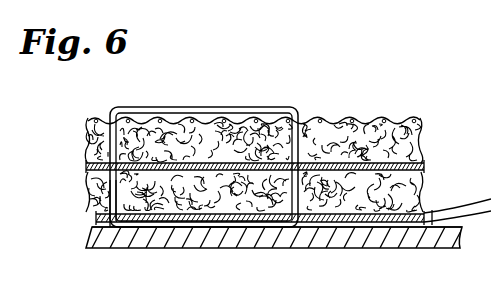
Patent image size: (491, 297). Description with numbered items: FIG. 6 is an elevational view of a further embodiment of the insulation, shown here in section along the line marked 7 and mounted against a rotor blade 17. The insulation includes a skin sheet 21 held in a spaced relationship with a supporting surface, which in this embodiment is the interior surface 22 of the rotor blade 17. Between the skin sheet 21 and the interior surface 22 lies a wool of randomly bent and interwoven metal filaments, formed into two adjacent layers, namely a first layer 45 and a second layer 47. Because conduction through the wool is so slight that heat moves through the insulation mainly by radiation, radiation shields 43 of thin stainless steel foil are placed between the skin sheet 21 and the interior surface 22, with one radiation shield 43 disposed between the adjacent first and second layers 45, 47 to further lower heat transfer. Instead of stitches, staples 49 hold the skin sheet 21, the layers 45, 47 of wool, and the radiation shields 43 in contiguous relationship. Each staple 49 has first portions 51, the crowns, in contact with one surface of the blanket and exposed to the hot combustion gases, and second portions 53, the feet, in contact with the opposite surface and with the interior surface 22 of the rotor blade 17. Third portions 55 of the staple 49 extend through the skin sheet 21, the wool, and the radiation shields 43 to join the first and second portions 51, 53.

The section line 7- 7 is at (429, 96).
The rotor blade 17 is at (386, 248).
The skin sheet 21 is at (360, 118).
The interior surface 22 is at (342, 233).
The radiation shields 43 is at (421, 165).
The first layer 45 is at (418, 139).
The second layer 47 is at (423, 186).
The staples 49 is at (248, 104).
The first portions 51 is at (166, 108).
The second portions 53 is at (131, 226).
The third portions 55 is at (114, 200).